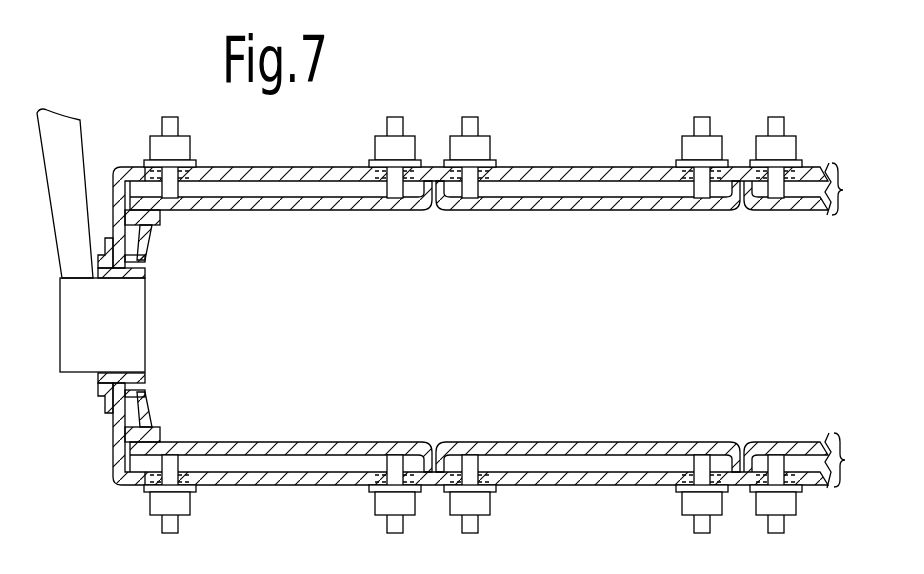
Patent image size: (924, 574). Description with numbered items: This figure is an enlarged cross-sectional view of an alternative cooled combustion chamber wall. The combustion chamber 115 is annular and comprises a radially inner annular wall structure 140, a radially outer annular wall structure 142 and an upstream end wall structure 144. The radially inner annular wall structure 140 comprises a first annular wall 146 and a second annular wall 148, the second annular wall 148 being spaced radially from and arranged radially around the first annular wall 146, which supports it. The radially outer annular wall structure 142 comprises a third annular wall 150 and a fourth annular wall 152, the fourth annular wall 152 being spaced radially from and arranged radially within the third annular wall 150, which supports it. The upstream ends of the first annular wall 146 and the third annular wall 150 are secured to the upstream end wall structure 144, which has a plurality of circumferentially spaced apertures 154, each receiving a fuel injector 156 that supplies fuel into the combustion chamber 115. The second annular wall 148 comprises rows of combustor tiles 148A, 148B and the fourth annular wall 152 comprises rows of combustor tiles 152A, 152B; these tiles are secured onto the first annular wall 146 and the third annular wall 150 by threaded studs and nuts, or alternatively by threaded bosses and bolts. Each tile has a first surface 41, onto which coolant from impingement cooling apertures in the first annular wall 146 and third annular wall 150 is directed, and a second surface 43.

The combustion chamber 115 is at (632, 96).
The radially inner annular wall structure 140 is at (845, 460).
The radially outer annular wall structure 142 is at (850, 180).
The upstream end wall structure 144 is at (120, 444).
The first annular wall 146 is at (655, 487).
The second annular wall 148 is at (673, 440).
The combustor tile 148A is at (340, 411).
The combustor tile 148B is at (570, 440).
The third annular wall 150 is at (645, 167).
The fourth annular wall 152 is at (655, 212).
The combustor tile 152A is at (288, 212).
The combustor tile 152B is at (540, 212).
The aperture 154 is at (142, 391).
The fuel injector 156 is at (122, 341).
The first surface 41 is at (508, 185).
The second surface 43 is at (517, 212).